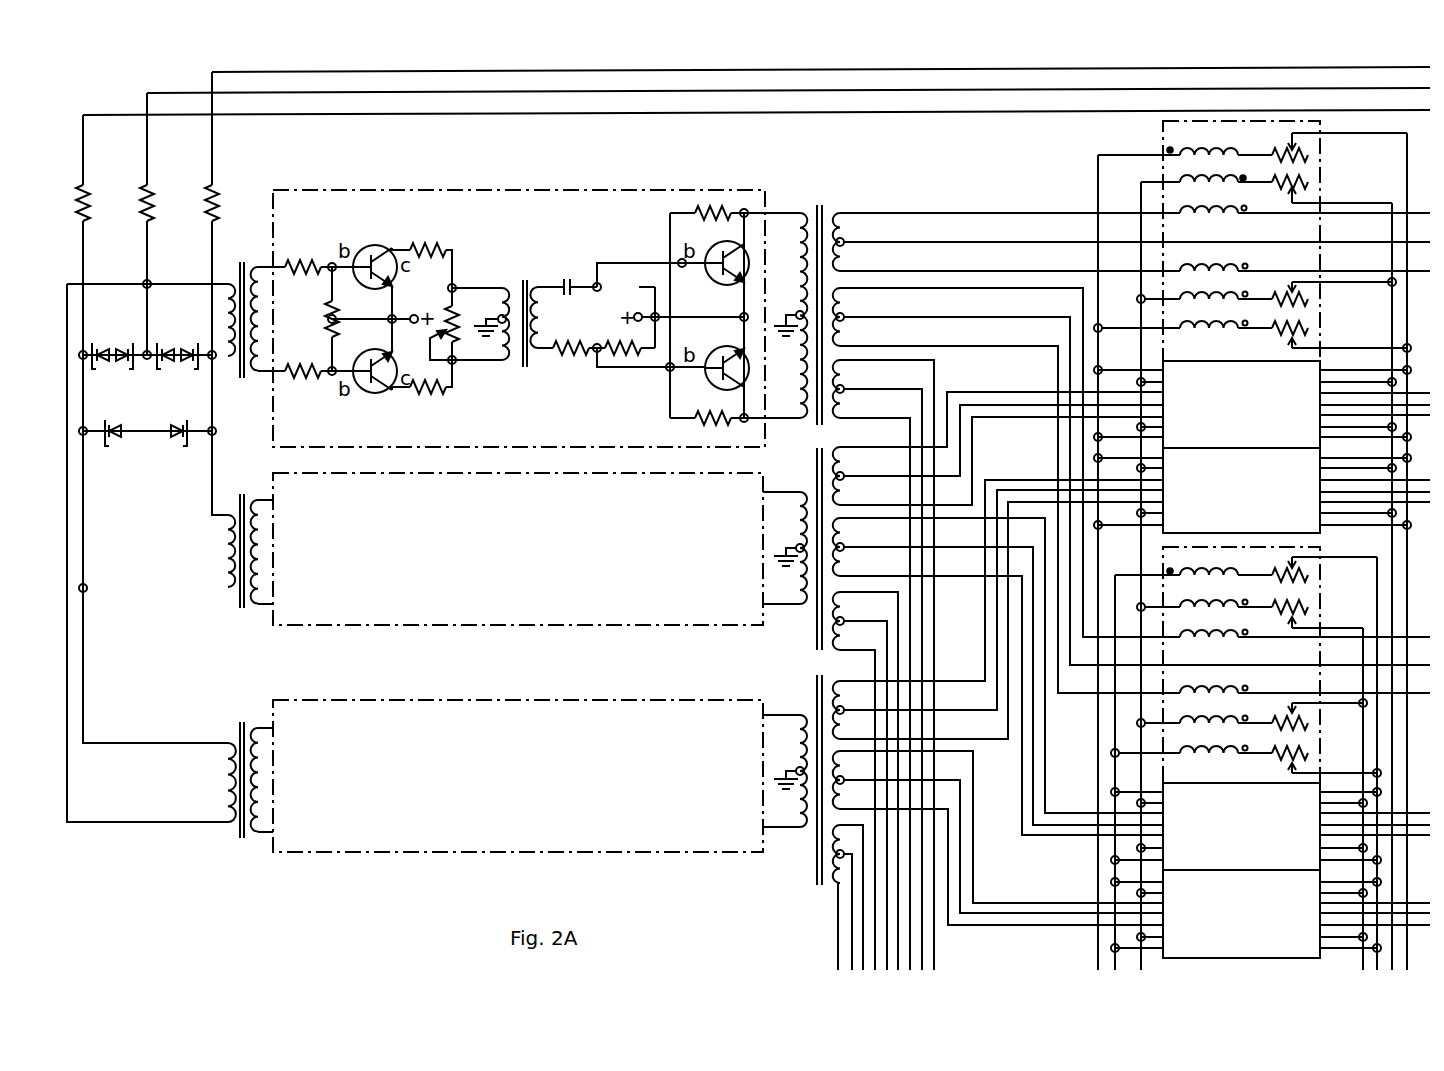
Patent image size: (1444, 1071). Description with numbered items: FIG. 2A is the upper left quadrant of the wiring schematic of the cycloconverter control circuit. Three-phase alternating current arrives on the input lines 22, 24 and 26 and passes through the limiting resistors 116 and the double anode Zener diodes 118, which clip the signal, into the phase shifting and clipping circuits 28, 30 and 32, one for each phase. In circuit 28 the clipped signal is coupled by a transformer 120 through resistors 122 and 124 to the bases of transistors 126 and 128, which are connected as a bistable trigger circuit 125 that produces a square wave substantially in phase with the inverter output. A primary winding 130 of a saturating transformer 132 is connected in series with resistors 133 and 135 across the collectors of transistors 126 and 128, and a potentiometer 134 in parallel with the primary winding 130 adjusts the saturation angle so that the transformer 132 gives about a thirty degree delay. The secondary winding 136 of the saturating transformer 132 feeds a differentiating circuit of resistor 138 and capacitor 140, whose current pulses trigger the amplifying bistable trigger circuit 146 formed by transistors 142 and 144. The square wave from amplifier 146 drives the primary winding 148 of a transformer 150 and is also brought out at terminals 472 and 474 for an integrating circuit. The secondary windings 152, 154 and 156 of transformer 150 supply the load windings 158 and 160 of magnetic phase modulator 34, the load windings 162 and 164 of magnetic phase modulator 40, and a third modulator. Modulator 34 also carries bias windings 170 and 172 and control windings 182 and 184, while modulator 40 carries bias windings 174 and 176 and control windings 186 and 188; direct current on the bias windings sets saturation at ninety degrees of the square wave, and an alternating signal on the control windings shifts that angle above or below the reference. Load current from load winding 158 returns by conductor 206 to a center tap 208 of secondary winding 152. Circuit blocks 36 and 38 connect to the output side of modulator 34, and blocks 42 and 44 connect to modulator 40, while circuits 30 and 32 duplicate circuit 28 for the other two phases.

The supply line 22 is at (1410, 70).
The supply line 24 is at (1410, 91).
The supply line 26 is at (1410, 114).
The phase shifting and clipping circuit 28 is at (535, 214).
The phase shifting and clipping circuit 30 is at (538, 507).
The phase shifting and clipping circuit 32 is at (538, 737).
The magnetic phase modulator 34 is at (1325, 192).
The detector block 36 is at (1250, 419).
The detector block 38 is at (1250, 506).
The magnetic phase modulator 40 is at (1322, 584).
The detector block 42 is at (1250, 841).
The detector block 44 is at (1250, 927).
The limiting resistors 116 is at (202, 202).
The double anode Zener diodes 118 is at (166, 418).
The transformer 120 is at (257, 262).
The resistor 122 is at (302, 272).
The resistor 124 is at (304, 366).
The bistable trigger circuit 125 is at (378, 316).
The transistor 126 is at (385, 246).
The transistor 128 is at (385, 400).
The primary winding 130 is at (502, 316).
The saturating transformer 132 is at (535, 276).
The resistor 133 is at (422, 250).
The potentiometer 134 is at (450, 292).
The resistor 135 is at (424, 397).
The secondary winding 136 is at (550, 342).
The resistor 138 is at (564, 362).
The capacitor 140 is at (560, 278).
The transistor 142 is at (714, 384).
The transistor 144 is at (714, 284).
The amplifying bistable trigger circuit 146 is at (730, 342).
The primary winding 148 is at (800, 262).
The transformer 150 is at (838, 204).
The secondary winding 152 is at (845, 222).
The secondary winding 154 is at (845, 296).
The secondary winding 156 is at (845, 369).
The load winding 158 is at (1188, 208).
The load winding 160 is at (1188, 266).
The load winding 162 is at (1188, 633).
The load winding 164 is at (1188, 689).
The bias winding 170 is at (1188, 178).
The bias winding 172 is at (1188, 295).
The bias winding 174 is at (1188, 603).
The bias winding 176 is at (1188, 719).
The control winding 182 is at (1188, 150).
The control winding 184 is at (1188, 324).
The control winding 186 is at (1188, 571).
The control winding 188 is at (1188, 749).
The conductor 206 is at (1302, 241).
The center tap 208 is at (844, 245).
The terminal 472 is at (1383, 216).
The terminal 474 is at (1378, 270).